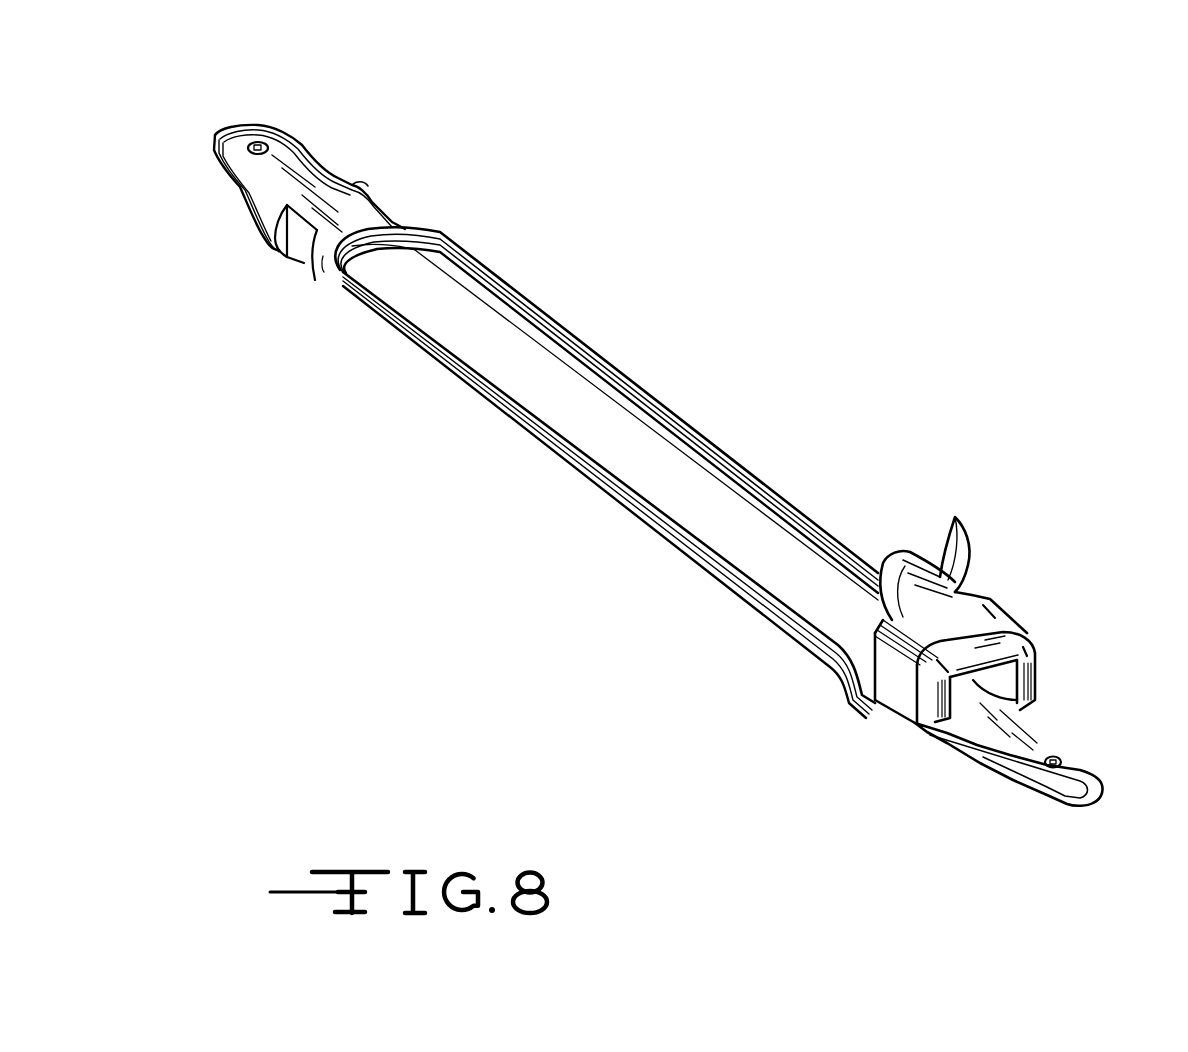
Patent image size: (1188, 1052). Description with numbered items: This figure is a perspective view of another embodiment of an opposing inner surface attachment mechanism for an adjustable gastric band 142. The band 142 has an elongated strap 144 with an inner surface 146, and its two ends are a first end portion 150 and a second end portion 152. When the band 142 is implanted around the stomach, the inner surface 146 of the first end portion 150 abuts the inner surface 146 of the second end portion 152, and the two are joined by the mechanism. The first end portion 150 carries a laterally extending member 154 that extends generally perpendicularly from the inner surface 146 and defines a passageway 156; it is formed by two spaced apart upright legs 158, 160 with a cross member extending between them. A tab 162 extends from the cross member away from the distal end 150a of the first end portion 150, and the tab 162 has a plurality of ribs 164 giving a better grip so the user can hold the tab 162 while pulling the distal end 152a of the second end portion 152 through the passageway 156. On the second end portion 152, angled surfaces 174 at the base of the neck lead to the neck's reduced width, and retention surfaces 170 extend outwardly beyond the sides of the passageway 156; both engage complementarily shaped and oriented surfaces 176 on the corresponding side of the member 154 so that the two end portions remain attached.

The adjustable gastric band 142 is at (312, 549).
The elongated strap 144 is at (637, 387).
The inner surface 146 is at (667, 452).
The first end portion 150 is at (970, 842).
The distal end of the first end portion 150a is at (1088, 800).
The second end portion 152 is at (300, 325).
The distal end of the second end portion 152a is at (224, 131).
The laterally extending member 154 is at (974, 637).
The passageway 156 is at (1022, 698).
The upright leg 158 is at (893, 687).
The upright leg 160 is at (1035, 676).
The tab 162 is at (897, 552).
The ribs 164 is at (956, 519).
The retention surfaces 170 is at (283, 233).
The angled surfaces 174 is at (316, 260).
The complementary surfaces 176 is at (1012, 620).